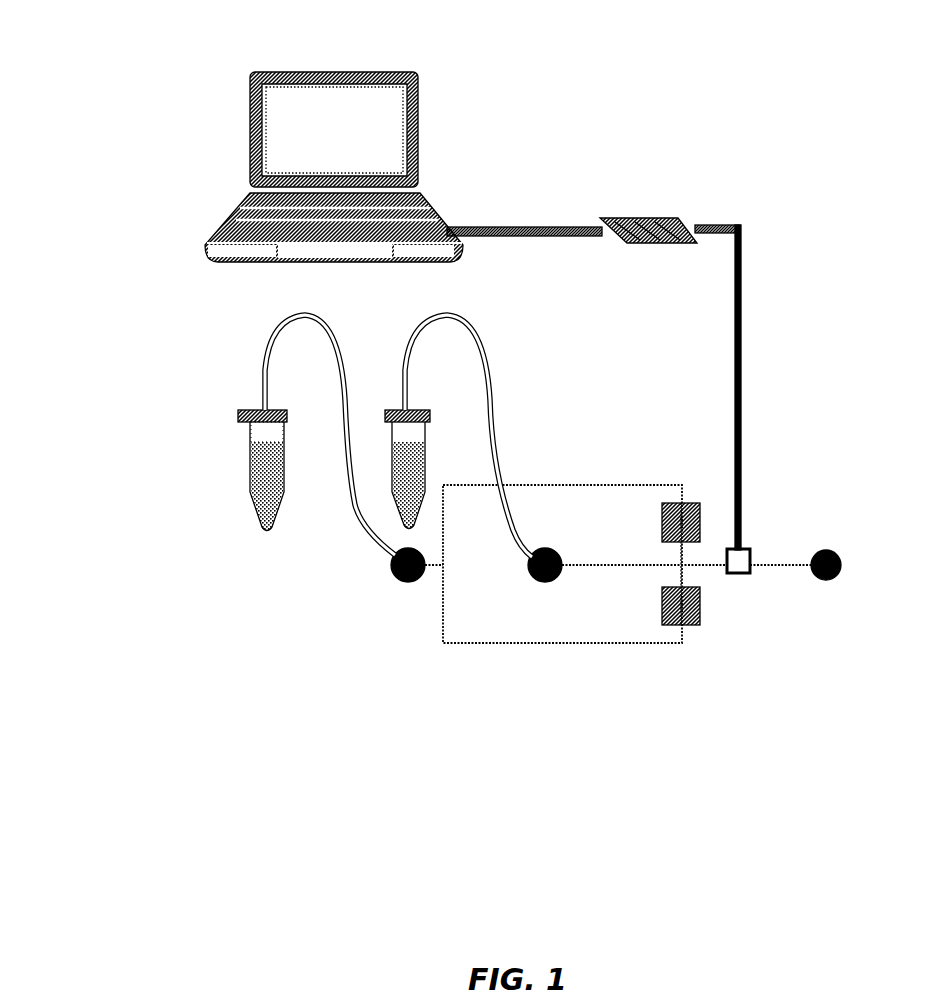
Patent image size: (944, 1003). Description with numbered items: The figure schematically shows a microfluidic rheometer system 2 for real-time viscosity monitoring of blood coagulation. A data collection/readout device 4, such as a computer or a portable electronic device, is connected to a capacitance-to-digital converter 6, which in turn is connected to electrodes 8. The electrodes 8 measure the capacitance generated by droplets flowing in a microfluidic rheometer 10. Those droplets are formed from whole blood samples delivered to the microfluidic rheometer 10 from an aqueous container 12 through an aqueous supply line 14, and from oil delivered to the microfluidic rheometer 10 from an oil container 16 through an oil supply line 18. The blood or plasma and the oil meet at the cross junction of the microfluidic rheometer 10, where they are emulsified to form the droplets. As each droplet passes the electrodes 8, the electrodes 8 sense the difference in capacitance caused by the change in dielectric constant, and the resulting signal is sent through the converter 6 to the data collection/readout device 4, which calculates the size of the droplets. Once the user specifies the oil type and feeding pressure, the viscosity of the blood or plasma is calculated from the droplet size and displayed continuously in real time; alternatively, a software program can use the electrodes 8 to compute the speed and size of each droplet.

The microfluidic rheometer system 2 is at (155, 115).
The data collection/readout device 4 is at (420, 113).
The capacitance-to-digital converter 6 is at (657, 218).
The electrodes 8 is at (728, 574).
The microfluidic rheometer 10 is at (612, 645).
The aqueous container 12 is at (393, 460).
The aqueous supply line 14 is at (492, 435).
The oil container 16 is at (263, 503).
The oil supply line 18 is at (363, 525).